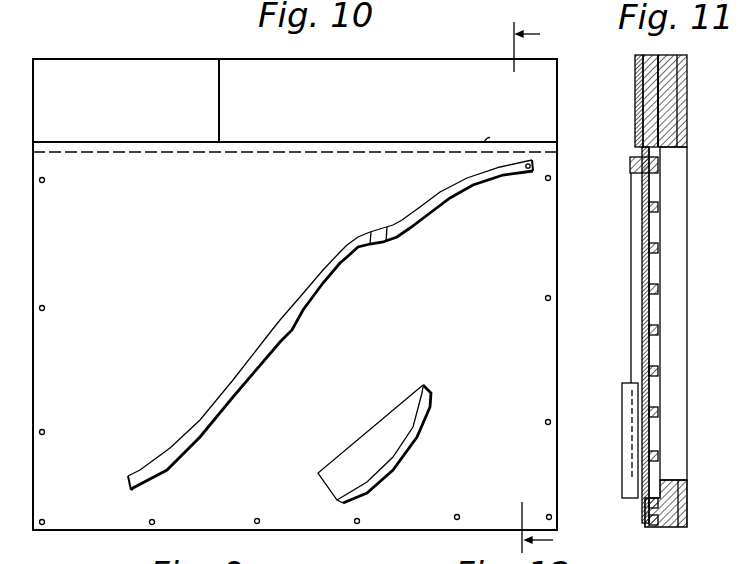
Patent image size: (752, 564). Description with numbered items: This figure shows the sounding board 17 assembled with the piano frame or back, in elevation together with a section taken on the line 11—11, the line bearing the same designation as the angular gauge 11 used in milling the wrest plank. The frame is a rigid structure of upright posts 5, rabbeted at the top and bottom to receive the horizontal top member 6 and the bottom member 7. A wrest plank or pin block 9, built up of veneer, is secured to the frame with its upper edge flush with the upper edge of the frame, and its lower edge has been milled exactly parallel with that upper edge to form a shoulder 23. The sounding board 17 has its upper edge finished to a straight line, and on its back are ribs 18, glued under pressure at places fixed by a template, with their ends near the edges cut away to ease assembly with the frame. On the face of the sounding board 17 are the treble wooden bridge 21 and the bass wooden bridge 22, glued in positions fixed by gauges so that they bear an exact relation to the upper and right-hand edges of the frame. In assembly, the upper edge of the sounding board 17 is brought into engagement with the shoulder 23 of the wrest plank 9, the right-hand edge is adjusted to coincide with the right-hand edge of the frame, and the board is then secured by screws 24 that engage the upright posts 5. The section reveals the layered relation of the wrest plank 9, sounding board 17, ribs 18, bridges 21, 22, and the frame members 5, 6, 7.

In FIG. 11, the upright posts 5 is at (682, 230).
In FIG. 11, the horizontal top member 6 is at (658, 90).
In FIG. 11, the bottom member 7 is at (688, 505).
In FIG. 10, the wrest plank 9 is at (543, 108).
In FIG. 11, the wrest plank 9 is at (642, 112).
In FIG. 10, the angular gauge 11 is at (543, 287).
In FIG. 10, the sounding board 17 is at (545, 352).
In FIG. 11, the sounding board 17 is at (652, 313).
In FIG. 11, the ribs 18 is at (660, 290).
In FIG. 10, the treble wooden bridge 21 is at (412, 220).
In FIG. 11, the treble wooden bridge 21 is at (630, 232).
In FIG. 10, the bass wooden bridge 22 is at (415, 425).
In FIG. 11, the bass wooden bridge 22 is at (628, 427).
In FIG. 10, the shoulder 23 is at (487, 143).
In FIG. 11, the shoulder 23 is at (642, 143).
In FIG. 10, the screws 24 is at (45, 432).
In FIG. 11, the screws 24 is at (650, 520).